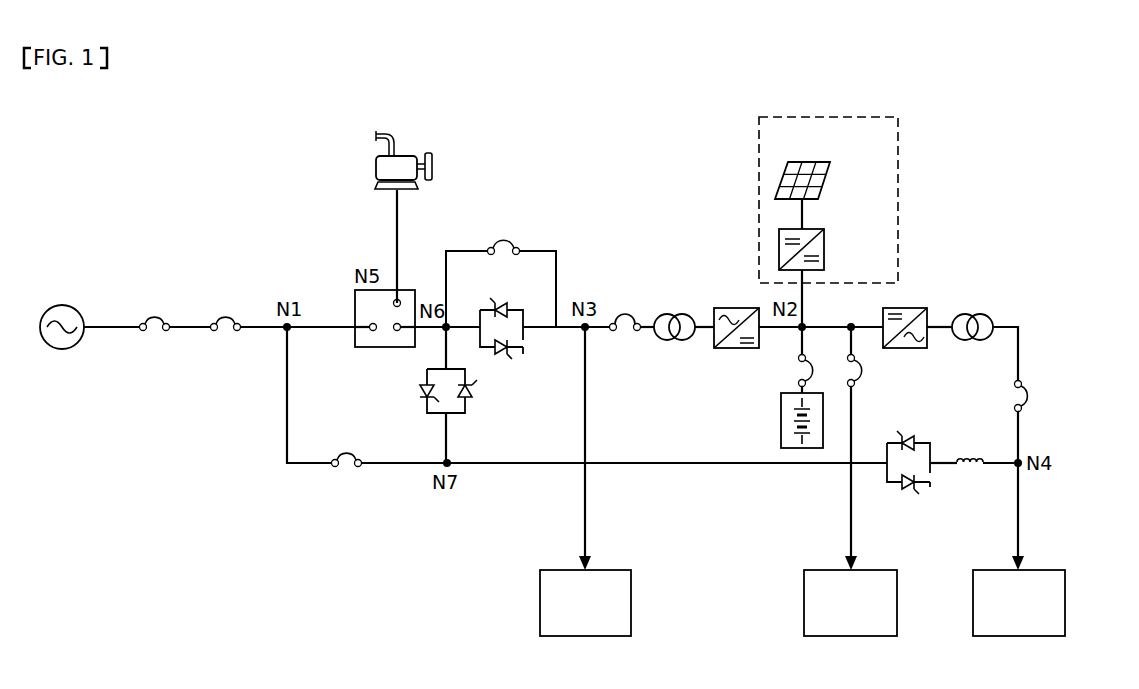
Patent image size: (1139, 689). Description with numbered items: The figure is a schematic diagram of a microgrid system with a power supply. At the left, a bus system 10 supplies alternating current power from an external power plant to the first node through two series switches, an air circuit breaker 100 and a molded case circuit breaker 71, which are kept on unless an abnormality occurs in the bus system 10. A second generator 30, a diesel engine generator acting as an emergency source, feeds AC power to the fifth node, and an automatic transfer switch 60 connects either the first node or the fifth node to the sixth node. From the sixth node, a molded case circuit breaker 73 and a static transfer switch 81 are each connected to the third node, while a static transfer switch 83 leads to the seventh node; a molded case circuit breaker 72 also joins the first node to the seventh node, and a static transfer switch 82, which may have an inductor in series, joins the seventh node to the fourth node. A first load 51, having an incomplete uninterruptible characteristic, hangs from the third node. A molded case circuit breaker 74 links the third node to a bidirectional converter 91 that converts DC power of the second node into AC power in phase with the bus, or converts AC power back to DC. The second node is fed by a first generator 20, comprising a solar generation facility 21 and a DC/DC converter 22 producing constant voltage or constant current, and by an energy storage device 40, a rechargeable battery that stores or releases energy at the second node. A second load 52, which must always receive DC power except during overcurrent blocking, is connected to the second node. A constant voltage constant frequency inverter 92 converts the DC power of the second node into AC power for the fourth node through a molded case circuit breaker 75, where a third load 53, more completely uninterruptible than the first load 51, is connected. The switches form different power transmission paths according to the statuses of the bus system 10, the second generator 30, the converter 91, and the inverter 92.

The bus system 10 is at (67, 304).
The switch 100 is at (155, 314).
The switch 71 is at (226, 314).
The switch 72 is at (349, 450).
The switch 73 is at (505, 238).
The switch 74 is at (625, 314).
The switch 75 is at (1032, 396).
The switch 60 is at (405, 290).
The second generator 30 is at (410, 152).
The switch 81 is at (514, 306).
The switch 82 is at (920, 440).
The switch 83 is at (476, 390).
The converter 91 is at (722, 308).
The inverter 92 is at (912, 308).
The first generator 20 is at (828, 117).
The solar generation facility 21 is at (825, 161).
The converter 22 is at (820, 229).
The energy storage device 40 is at (781, 420).
The first load 51 is at (610, 570).
The second load 52 is at (875, 570).
The third load 53 is at (1043, 570).